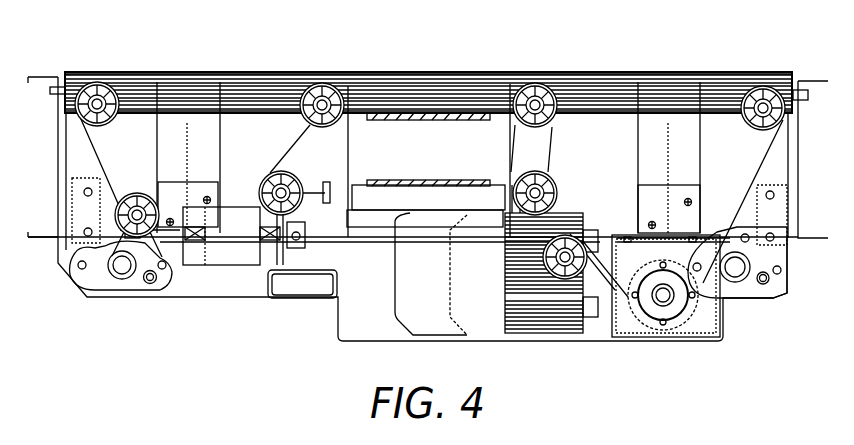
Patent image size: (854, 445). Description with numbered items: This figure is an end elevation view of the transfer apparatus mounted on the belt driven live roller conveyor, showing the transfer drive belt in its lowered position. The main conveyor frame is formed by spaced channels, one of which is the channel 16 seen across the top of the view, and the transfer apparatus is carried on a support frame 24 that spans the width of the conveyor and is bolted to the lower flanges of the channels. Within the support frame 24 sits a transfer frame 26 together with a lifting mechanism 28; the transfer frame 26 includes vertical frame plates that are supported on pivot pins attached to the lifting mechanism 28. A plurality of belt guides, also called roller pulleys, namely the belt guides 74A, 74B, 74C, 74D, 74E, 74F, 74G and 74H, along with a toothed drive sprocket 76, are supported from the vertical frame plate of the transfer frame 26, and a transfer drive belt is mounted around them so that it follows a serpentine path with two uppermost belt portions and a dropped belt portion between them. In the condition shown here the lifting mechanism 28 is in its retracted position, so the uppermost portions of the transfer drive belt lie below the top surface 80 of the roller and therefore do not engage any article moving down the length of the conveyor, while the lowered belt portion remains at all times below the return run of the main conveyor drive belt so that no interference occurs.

The second spaced channel 16 is at (660, 85).
The support frame 24 is at (52, 250).
The transfer frame 26 is at (122, 128).
The lifting mechanism 28 is at (212, 257).
The belt guide 74A is at (90, 147).
The belt guide 74B is at (348, 122).
The belt guide 74C is at (281, 170).
The belt guide 74D is at (512, 172).
The belt guide 74E is at (560, 127).
The belt guide 74F is at (740, 130).
The belt guide 74G is at (560, 277).
The belt guide 74H is at (118, 205).
The toothed drive sprocket 76 is at (687, 320).
The top surface 80 is at (760, 82).